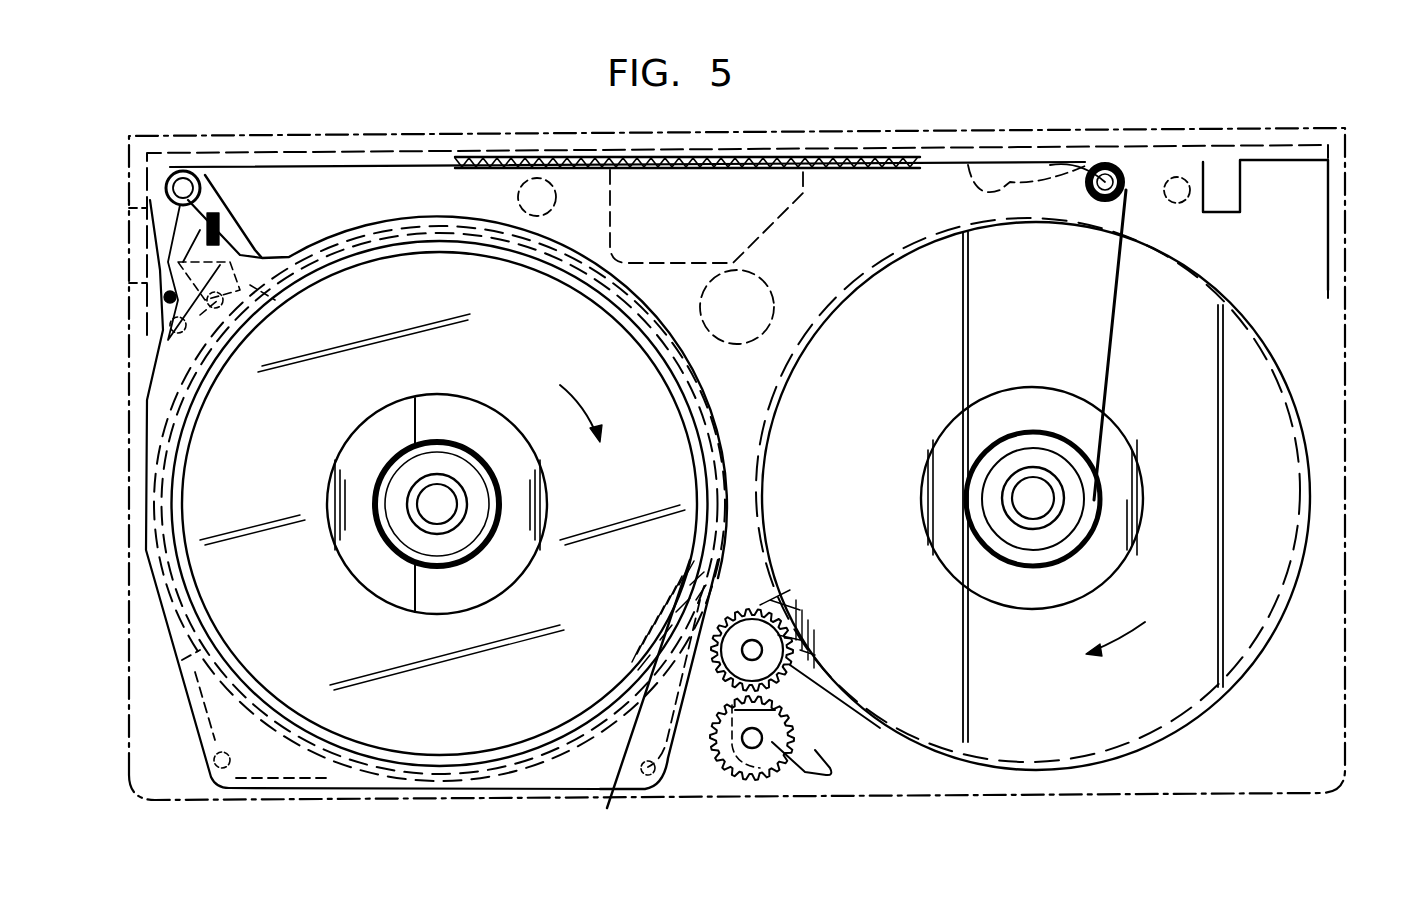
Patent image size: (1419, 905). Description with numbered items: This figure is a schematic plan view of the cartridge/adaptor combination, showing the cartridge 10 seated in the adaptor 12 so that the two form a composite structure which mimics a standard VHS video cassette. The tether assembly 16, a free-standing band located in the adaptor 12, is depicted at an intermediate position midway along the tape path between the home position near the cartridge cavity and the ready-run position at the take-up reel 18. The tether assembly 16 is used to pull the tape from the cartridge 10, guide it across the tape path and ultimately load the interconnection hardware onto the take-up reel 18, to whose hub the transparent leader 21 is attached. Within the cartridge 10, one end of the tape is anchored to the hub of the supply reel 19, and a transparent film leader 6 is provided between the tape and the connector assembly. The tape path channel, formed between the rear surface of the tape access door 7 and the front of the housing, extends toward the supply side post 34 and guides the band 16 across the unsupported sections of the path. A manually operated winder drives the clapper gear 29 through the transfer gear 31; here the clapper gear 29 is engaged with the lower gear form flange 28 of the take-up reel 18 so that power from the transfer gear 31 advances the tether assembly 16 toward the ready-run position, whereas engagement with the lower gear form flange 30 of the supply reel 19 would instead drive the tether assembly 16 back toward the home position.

The transparent film leader 6 is at (325, 165).
The tape access door 7 is at (1348, 182).
The cartridge 10 is at (146, 447).
The adaptor 12 is at (1260, 155).
The tether assembly 16 is at (777, 163).
The take-up reel 18 is at (1290, 390).
The supply reel 19 is at (180, 420).
The leader 21 is at (1110, 332).
The lower gear form flange of the take-up reel 28 is at (773, 588).
The clapper gear 29 is at (793, 667).
The lower gear form flange of the supply reel 30 is at (640, 725).
The transfer gear 31 is at (795, 742).
The supply side post 34 is at (182, 170).